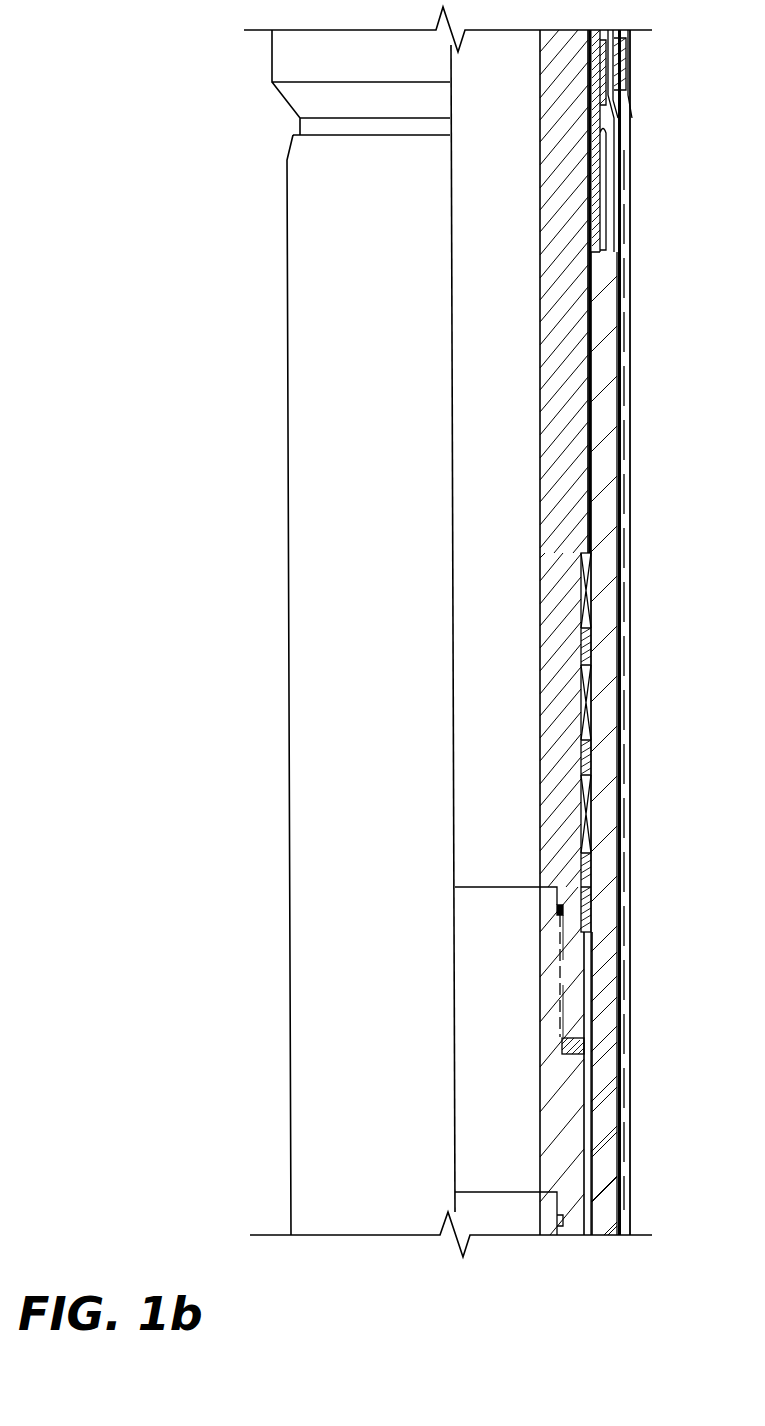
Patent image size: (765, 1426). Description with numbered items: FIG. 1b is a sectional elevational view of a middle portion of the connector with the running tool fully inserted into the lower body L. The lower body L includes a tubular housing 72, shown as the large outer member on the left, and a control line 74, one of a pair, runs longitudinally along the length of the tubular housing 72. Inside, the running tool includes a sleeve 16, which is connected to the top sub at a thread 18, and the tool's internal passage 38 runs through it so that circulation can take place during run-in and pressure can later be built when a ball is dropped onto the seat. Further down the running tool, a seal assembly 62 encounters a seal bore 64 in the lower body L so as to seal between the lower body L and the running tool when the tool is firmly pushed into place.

The tubular housing 72 is at (381, 326).
The internal passage 38 is at (504, 232).
The seal assembly 62 is at (578, 590).
The sleeve 16 is at (548, 1140).
The thread 18 is at (562, 975).
The seal bore 64 is at (588, 1054).
The control line 74 is at (624, 326).
The lower body L is at (288, 639).